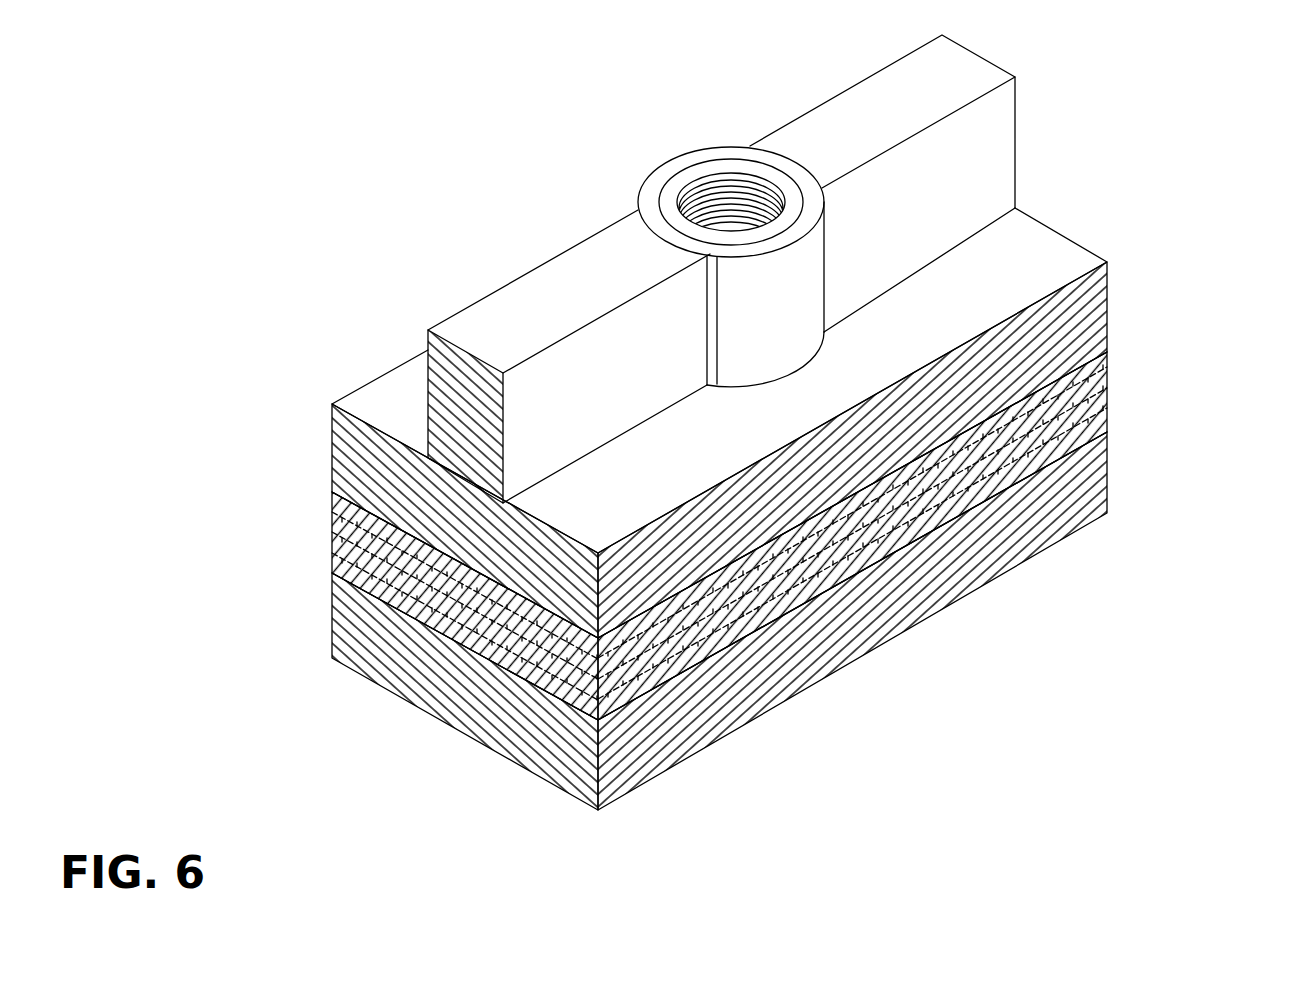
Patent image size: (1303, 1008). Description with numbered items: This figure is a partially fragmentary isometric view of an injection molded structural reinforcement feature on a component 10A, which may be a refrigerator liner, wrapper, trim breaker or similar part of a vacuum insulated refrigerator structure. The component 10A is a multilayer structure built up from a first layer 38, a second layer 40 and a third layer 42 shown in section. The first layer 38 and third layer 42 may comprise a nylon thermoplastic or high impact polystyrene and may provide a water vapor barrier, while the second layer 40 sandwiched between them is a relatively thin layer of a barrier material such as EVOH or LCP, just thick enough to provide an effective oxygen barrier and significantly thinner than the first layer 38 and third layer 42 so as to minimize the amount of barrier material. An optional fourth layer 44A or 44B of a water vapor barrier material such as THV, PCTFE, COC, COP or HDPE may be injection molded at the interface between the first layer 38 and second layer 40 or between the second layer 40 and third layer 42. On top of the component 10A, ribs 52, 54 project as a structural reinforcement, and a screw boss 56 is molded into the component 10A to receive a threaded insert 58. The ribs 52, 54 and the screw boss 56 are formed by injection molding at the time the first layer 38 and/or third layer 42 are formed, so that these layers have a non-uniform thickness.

The component 10A is at (363, 375).
The first layer 38 is at (1108, 297).
The second layer 40 is at (1108, 392).
The third layer 42 is at (1108, 473).
The fourth layer 44A is at (1108, 352).
The fourth layer 44B is at (1108, 422).
The rib 52 is at (696, 269).
The rib 54 is at (523, 297).
The screw boss 56 is at (650, 175).
The threaded insert 58 is at (735, 163).